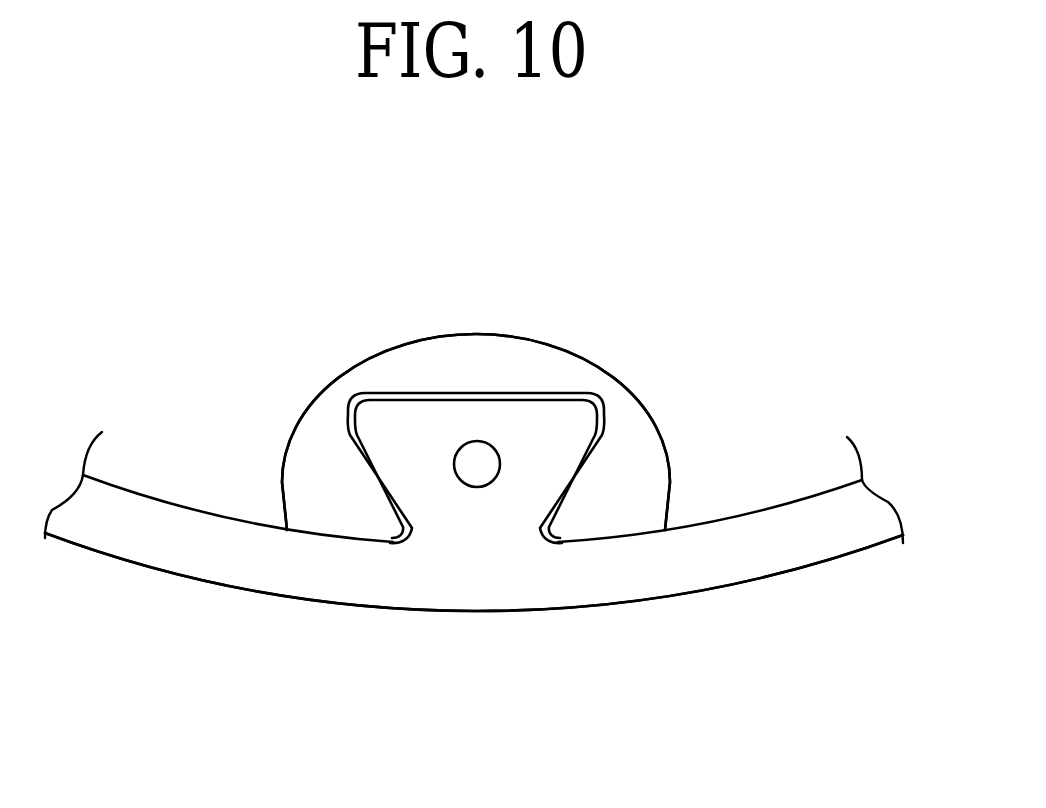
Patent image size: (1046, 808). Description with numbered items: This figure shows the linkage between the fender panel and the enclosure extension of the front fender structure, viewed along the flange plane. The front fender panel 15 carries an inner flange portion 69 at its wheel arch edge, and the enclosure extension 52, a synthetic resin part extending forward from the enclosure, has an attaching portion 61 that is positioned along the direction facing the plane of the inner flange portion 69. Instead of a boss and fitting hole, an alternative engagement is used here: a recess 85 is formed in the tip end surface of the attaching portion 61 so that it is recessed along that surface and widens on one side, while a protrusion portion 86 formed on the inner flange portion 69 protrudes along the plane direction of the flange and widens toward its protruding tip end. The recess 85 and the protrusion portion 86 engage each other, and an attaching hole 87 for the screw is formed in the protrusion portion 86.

The front fender panel 15 is at (827, 561).
The inner flange portion 69 is at (695, 575).
The enclosure extension 52 is at (657, 424).
The attaching portion 61 is at (603, 363).
The protrusion portion 86 is at (523, 393).
The recess 85 is at (402, 400).
The attaching hole 87 is at (458, 469).